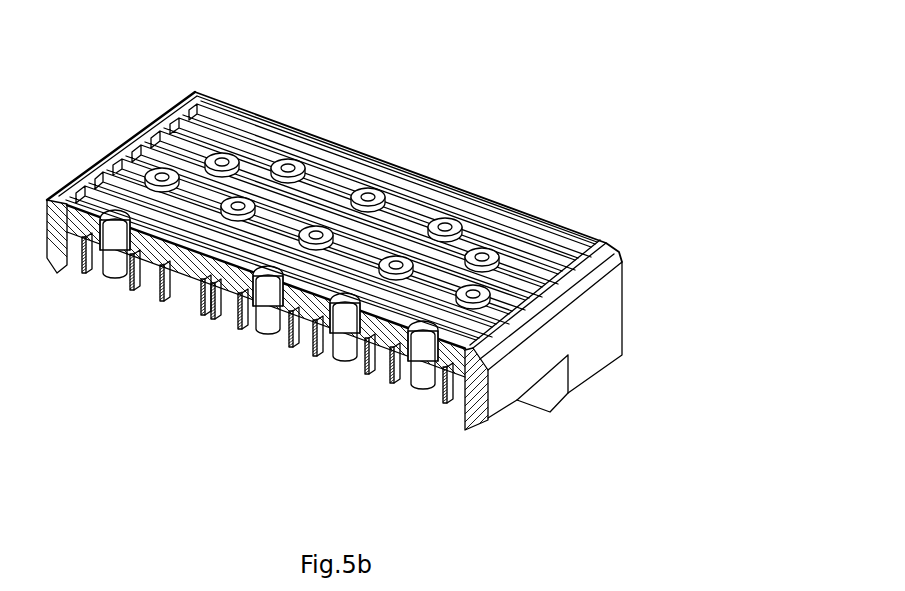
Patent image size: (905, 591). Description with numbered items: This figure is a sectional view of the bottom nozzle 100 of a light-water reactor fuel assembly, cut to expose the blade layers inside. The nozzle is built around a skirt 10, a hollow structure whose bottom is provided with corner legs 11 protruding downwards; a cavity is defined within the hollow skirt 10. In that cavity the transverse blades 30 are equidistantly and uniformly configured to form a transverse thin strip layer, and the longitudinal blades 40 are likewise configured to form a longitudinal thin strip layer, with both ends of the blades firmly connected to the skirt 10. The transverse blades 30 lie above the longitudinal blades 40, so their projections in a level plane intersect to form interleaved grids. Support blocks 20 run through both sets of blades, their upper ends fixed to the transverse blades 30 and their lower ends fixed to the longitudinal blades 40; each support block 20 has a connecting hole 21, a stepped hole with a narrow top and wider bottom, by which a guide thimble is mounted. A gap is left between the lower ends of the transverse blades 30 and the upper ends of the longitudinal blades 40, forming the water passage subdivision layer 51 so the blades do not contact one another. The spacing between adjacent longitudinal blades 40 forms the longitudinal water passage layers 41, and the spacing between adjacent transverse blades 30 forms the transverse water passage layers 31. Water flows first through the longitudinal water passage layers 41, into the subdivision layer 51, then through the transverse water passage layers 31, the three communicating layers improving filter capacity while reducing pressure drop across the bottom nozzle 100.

The bottom nozzle 100 is at (160, 60).
The skirt 10 is at (420, 177).
The corner legs 11 is at (573, 395).
The support blocks 20 is at (370, 194).
The connecting hole 21 is at (291, 165).
The transverse blades 30 is at (105, 182).
The transverse water passage layers 31 is at (155, 145).
The longitudinal blades 40 is at (137, 290).
The longitudinal water passage layers 41 is at (227, 320).
The water passage subdivision layer 51 is at (140, 262).